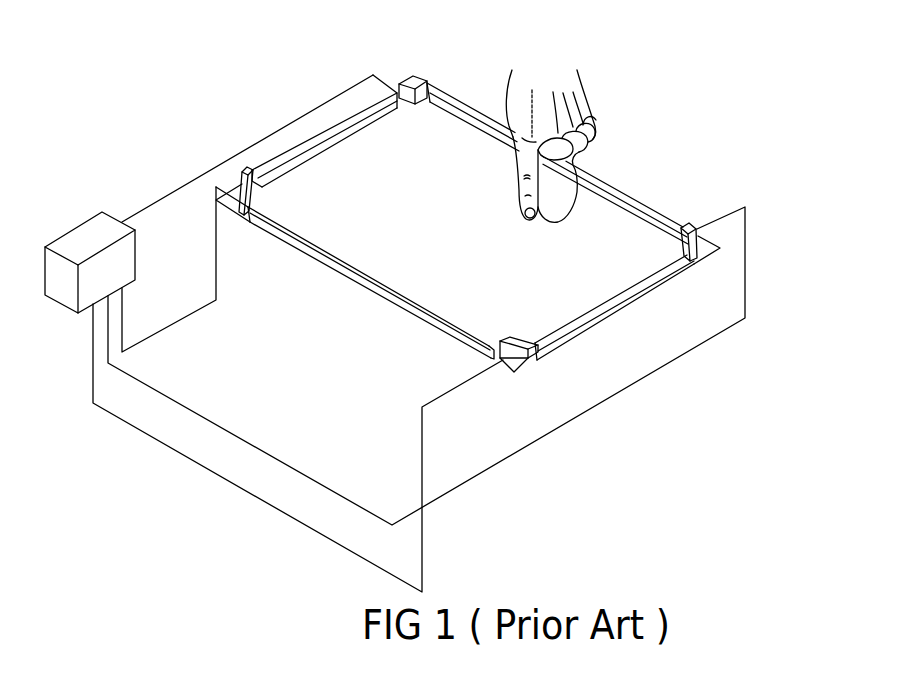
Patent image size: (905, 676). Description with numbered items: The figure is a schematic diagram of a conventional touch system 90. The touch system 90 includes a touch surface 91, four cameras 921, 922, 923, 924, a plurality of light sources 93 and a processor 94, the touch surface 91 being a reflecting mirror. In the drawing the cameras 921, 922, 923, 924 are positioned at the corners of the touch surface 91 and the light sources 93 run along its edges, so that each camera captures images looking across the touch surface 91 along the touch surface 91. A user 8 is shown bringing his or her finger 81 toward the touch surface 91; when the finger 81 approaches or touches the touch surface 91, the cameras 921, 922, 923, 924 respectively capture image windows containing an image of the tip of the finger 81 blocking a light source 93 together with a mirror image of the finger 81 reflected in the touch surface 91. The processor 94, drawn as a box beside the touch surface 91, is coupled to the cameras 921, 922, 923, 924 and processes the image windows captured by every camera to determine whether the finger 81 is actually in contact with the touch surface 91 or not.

The touch system 90 is at (722, 71).
The touch surface 91 is at (378, 147).
The light source 93 is at (337, 130).
The camera 921 is at (239, 183).
The camera 922 is at (410, 80).
The camera 923 is at (685, 227).
The camera 924 is at (520, 357).
The processor 94 is at (86, 230).
The user 8 is at (576, 133).
The finger 81 is at (569, 216).